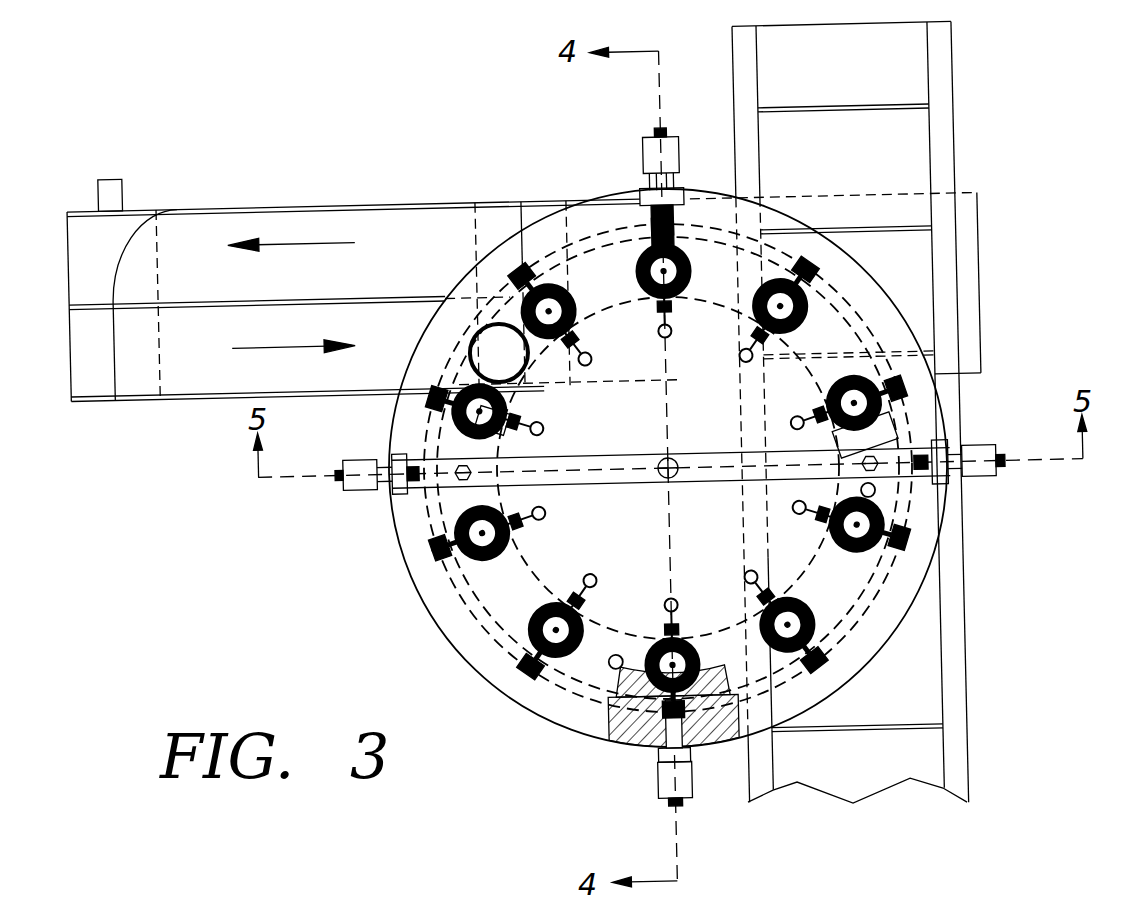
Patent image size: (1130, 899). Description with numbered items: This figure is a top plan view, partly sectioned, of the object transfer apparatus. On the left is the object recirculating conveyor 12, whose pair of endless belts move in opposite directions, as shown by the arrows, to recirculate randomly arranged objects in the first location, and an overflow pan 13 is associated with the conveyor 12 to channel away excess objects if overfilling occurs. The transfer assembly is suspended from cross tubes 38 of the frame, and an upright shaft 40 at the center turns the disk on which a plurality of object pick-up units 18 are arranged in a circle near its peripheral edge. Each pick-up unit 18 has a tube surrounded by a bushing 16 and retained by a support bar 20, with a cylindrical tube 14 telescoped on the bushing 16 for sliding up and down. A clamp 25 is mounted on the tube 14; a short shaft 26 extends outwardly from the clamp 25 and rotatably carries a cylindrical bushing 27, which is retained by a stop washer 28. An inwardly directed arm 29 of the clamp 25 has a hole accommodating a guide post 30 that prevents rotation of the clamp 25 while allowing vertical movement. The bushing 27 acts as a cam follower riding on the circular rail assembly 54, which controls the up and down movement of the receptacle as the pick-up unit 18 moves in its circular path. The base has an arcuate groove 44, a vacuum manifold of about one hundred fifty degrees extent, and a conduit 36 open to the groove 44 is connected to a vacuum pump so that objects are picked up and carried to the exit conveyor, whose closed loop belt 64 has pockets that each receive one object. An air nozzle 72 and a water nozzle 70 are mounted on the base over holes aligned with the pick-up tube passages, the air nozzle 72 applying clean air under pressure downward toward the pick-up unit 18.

The object recirculating conveyor 12 is at (219, 356).
The overflow pan 13 is at (965, 283).
The cylindrical tube 14 is at (538, 612).
The bushing 16 is at (552, 603).
The object pick-up unit 18 is at (580, 615).
The support bar 20 is at (590, 630).
The clamp 25 is at (512, 542).
The short shaft 26 is at (433, 538).
The cylindrical bushing 27 is at (445, 557).
The stop washer 28 is at (433, 553).
The inwardly directed arm 29 is at (517, 512).
The guide post 30 is at (544, 513).
The conduit 36 is at (493, 347).
The cross tube 38 is at (985, 470).
The upright shaft 40 is at (660, 462).
The arcuate groove 44 is at (613, 267).
The rail assembly 54 is at (560, 685).
The belt 64 is at (918, 740).
The water nozzle 70 is at (872, 492).
The air nozzle 72 is at (603, 668).